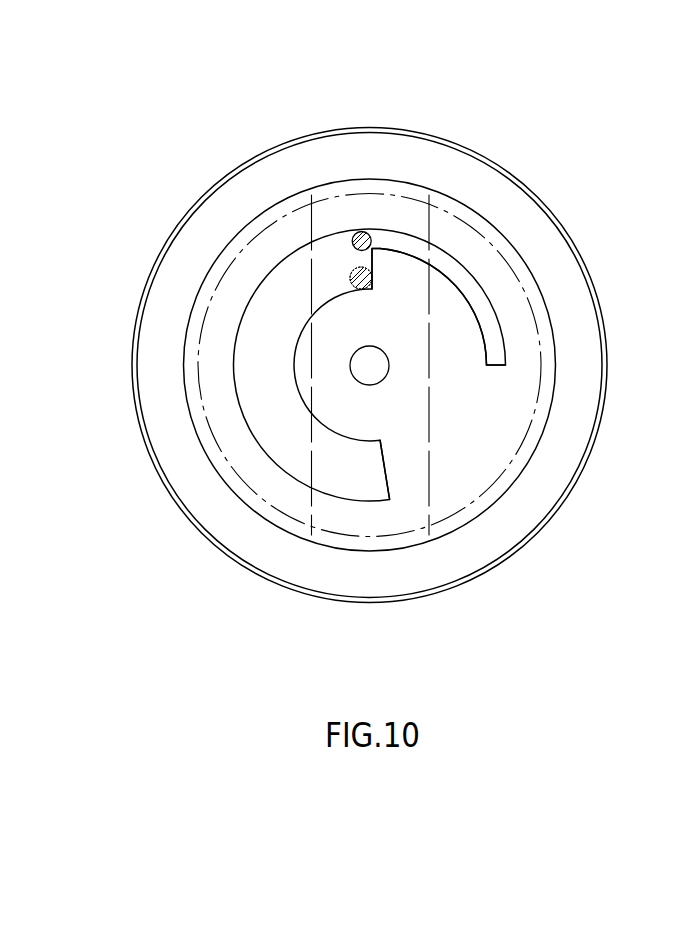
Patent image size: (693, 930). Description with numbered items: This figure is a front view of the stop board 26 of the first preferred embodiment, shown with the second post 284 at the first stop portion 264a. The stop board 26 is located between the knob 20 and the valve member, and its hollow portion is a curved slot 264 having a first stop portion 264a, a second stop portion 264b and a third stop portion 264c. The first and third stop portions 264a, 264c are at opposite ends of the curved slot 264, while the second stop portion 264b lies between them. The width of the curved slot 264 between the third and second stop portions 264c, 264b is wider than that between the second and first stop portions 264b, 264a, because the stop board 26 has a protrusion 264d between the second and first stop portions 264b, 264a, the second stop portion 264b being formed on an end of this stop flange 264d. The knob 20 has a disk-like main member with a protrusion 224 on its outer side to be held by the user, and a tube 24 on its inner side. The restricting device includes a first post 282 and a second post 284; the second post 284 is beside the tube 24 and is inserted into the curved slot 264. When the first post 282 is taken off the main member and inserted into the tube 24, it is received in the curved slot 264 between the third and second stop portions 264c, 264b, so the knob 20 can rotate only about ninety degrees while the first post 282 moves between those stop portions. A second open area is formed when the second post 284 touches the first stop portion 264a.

The knob 20 is at (532, 268).
The tube 24 is at (350, 270).
The stop board 26 is at (534, 171).
The protrusion 224 is at (430, 375).
The curved slot 264 is at (287, 288).
The first stop portion 264a is at (495, 368).
The second stop portion 264b is at (402, 287).
The third stop portion 264c is at (389, 488).
The protrusion (stop flange) 264d is at (377, 252).
The first post 282 is at (355, 268).
The second post 284 is at (365, 232).